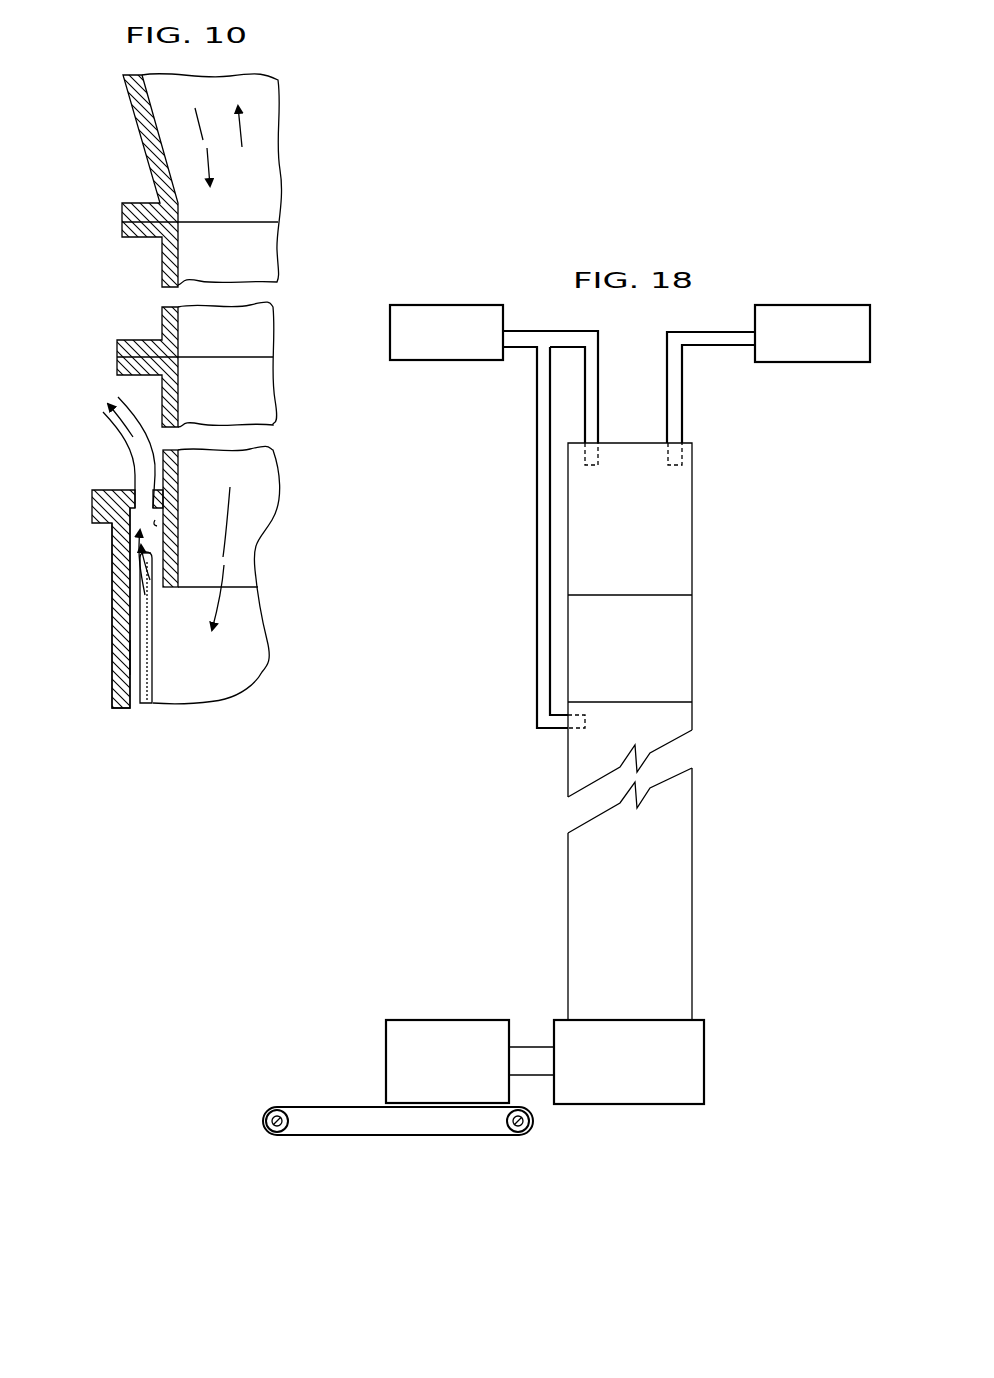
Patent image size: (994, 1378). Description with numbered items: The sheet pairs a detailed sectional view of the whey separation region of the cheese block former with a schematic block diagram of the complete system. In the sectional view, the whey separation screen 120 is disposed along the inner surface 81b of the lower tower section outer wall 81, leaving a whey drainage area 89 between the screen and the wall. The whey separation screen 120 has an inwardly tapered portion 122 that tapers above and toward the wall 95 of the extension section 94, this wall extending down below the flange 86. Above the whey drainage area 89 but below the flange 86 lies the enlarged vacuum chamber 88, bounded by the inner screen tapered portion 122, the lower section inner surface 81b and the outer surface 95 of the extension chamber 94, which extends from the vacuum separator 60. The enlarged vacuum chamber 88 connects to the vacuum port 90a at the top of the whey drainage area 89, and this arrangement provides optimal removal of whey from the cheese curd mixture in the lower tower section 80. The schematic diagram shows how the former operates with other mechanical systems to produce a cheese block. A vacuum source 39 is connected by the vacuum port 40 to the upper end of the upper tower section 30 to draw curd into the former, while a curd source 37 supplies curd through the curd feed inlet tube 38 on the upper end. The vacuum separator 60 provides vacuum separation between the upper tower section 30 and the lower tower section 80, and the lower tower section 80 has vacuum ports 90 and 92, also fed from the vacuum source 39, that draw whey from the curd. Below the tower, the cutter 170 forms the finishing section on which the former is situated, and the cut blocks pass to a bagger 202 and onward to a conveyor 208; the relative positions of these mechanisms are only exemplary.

In FIG. 10, the upper tower section 30 is at (170, 128).
In FIG. 18, the upper tower section 30 is at (683, 558).
In FIG. 18, the curd source 37 is at (815, 362).
In FIG. 18, the curd feed inlet tube 38 is at (673, 402).
In FIG. 18, the vacuum source 39 is at (440, 360).
In FIG. 18, the vacuum port 40 is at (597, 393).
In FIG. 18, the vacuum separator 60 is at (708, 651).
In FIG. 18, the lower tower section 80 is at (683, 862).
In FIG. 10, the lower tower section outer wall 81 is at (118, 672).
In FIG. 10, the inner surface 81b is at (133, 656).
In FIG. 10, the flange 86 is at (92, 491).
In FIG. 10, the enlarged vacuum chamber 88 is at (135, 585).
In FIG. 10, the whey drainage area 89 is at (137, 690).
In FIG. 10, the vacuum port 90 is at (145, 463).
In FIG. 18, the vacuum port 90 is at (522, 537).
In FIG. 10, the vacuum port 90a is at (142, 524).
In FIG. 18, the vacuum port 92 is at (537, 447).
In FIG. 10, the extension section 94 is at (250, 538).
In FIG. 10, the extension section wall 95 is at (160, 524).
In FIG. 10, the whey separation screen 120 is at (153, 684).
In FIG. 10, the inwardly tapered portion 122 is at (153, 553).
In FIG. 18, the cutter 170 is at (697, 1030).
In FIG. 18, the bagger 202 is at (452, 1020).
In FIG. 18, the conveyor 208 is at (465, 1136).